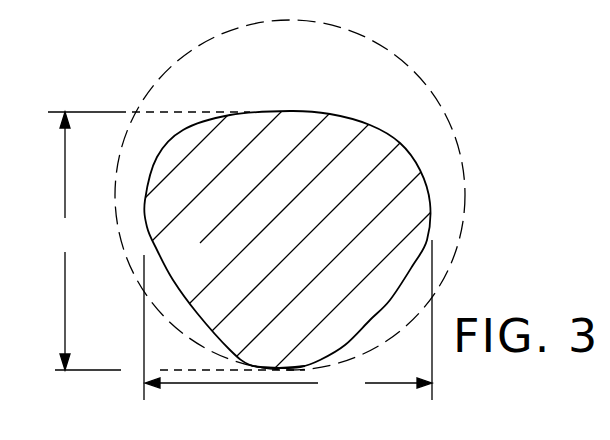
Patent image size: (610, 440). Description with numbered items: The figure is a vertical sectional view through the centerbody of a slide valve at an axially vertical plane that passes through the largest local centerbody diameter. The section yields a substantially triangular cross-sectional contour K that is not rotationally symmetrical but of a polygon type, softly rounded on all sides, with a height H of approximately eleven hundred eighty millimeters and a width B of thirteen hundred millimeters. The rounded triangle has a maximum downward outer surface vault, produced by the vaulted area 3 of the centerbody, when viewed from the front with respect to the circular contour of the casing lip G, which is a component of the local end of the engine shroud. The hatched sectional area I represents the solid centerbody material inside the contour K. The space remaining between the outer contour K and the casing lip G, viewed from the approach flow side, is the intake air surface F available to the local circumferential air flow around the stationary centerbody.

The intake air surface F is at (382, 80).
The casing lip G is at (452, 80).
The outer contour K is at (422, 176).
The cross-sectional area I is at (358, 302).
The vaulted area 3 is at (309, 368).
The width B is at (288, 320).
The height H is at (149, 241).